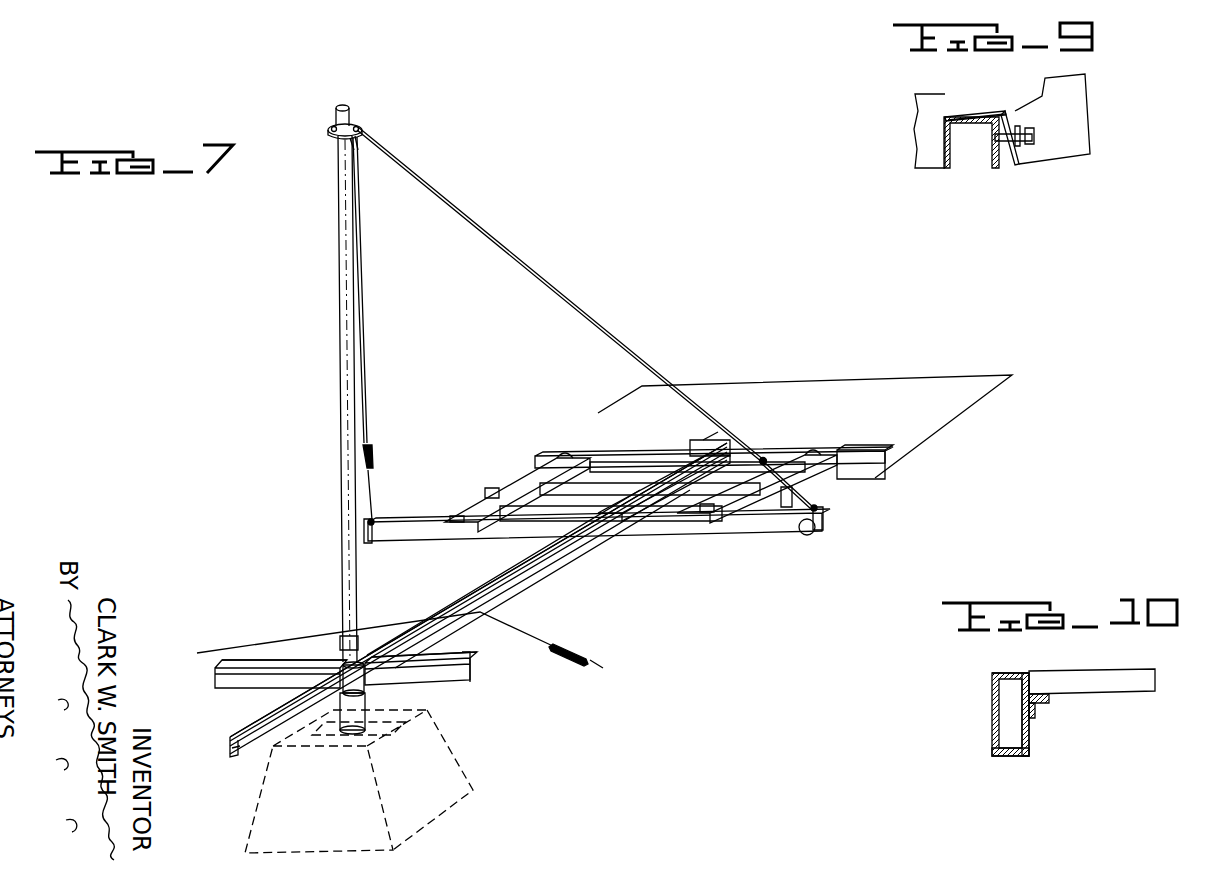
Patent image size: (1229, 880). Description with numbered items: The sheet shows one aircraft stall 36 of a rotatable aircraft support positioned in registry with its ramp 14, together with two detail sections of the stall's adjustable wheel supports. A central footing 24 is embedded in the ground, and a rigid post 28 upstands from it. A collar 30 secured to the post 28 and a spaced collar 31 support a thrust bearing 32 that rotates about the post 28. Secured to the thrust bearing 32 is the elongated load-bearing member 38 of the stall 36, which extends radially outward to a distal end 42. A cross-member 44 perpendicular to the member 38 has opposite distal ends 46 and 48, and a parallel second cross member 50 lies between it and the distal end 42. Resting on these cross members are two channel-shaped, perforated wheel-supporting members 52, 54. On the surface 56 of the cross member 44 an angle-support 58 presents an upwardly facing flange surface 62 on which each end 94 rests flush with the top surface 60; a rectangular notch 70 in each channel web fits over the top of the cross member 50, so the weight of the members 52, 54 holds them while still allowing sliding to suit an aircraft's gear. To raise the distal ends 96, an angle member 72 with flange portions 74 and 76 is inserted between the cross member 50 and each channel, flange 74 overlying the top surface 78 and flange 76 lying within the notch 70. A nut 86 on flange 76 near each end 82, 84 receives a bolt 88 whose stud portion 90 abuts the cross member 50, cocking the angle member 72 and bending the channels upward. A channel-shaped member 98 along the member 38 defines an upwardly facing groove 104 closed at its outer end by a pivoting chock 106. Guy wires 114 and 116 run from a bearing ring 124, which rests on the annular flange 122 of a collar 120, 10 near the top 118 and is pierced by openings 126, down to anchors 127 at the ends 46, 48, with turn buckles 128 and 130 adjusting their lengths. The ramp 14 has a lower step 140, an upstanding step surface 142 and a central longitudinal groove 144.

In FIG. 7, the collar 10 is at (824, 518).
In FIG. 7, the ramp 14 is at (750, 380).
In FIG. 7, the central footing 24 is at (472, 795).
In FIG. 7, the rigid post 28 is at (338, 388).
In FIG. 7, the collar 30 is at (368, 690).
In FIG. 7, the collar 31 is at (340, 640).
In FIG. 7, the thrust bearing 32 is at (364, 727).
In FIG. 7, the aircraft stall 36 is at (490, 611).
In FIG. 7, the elongated load-bearing member 38 is at (536, 578).
In FIG. 7, the distal end 42 is at (762, 456).
In FIG. 7, the cross-member 44 is at (646, 516).
In FIG. 10, the cross-member 44 is at (992, 701).
In FIG. 7, the distal end 46 is at (822, 526).
In FIG. 7, the distal end 48 is at (366, 530).
In FIG. 7, the second cross member 50 is at (690, 517).
In FIG. 7, the wheel-supporting member 52 is at (815, 465).
In FIG. 9, the wheel-supporting member 52 is at (1050, 82).
In FIG. 10, the wheel-supporting member 52 is at (1100, 670).
In FIG. 7, the wheel-supporting member 54 is at (532, 470).
In FIG. 10, the surface 56 is at (1024, 745).
In FIG. 10, the angle-support 58 is at (1035, 708).
In FIG. 10, the top surface 60 is at (1000, 674).
In FIG. 10, the flange surface 62 is at (1038, 692).
In FIG. 7, the rectangular notch 70 is at (522, 526).
In FIG. 9, the rectangular notch 70 is at (938, 160).
In FIG. 9, the angle member 72 is at (978, 111).
In FIG. 9, the flange portion 74 is at (963, 114).
In FIG. 9, the flange portion 76 is at (1010, 112).
In FIG. 9, the top surface 78 is at (946, 118).
In FIG. 7, the end 82 is at (800, 490).
In FIG. 7, the end 84 is at (502, 492).
In FIG. 9, the nut 86 is at (1016, 148).
In FIG. 9, the bolt 88 is at (1034, 131).
In FIG. 9, the stud portion 90 is at (1019, 133).
In FIG. 7, the end 94 is at (455, 522).
In FIG. 10, the end 94 is at (1012, 674).
In FIG. 7, the distal end 96 is at (562, 455).
In FIG. 7, the channel-shaped member 98 is at (470, 590).
In FIG. 7, the groove 104 is at (424, 612).
In FIG. 7, the chock 106 is at (710, 443).
In FIG. 7, the guy wire 114 is at (362, 349).
In FIG. 7, the guy wire 116 is at (527, 268).
In FIG. 7, the top 118 is at (338, 105).
In FIG. 7, the collar 120 is at (355, 123).
In FIG. 7, the annular flange 122 is at (356, 140).
In FIG. 7, the bearing ring 124 is at (330, 127).
In FIG. 7, the openings 126 is at (336, 136).
In FIG. 7, the anchors 127 is at (374, 522).
In FIG. 7, the turn buckle 128 is at (370, 447).
In FIG. 7, the turn buckle 130 is at (777, 470).
In FIG. 7, the step 140 is at (603, 463).
In FIG. 7, the step surface 142 is at (650, 485).
In FIG. 7, the groove 144 is at (713, 430).